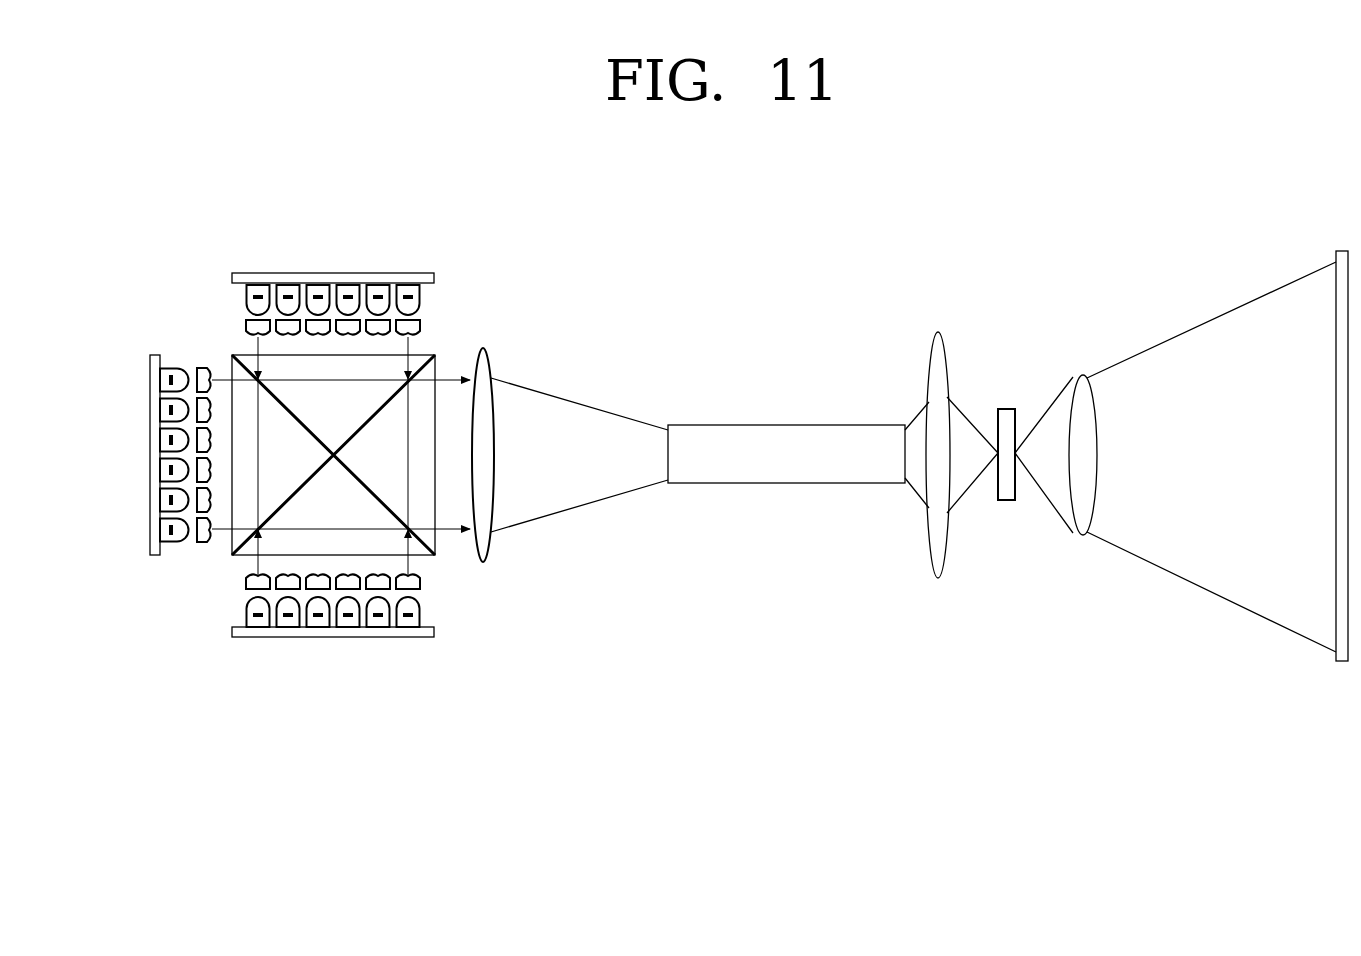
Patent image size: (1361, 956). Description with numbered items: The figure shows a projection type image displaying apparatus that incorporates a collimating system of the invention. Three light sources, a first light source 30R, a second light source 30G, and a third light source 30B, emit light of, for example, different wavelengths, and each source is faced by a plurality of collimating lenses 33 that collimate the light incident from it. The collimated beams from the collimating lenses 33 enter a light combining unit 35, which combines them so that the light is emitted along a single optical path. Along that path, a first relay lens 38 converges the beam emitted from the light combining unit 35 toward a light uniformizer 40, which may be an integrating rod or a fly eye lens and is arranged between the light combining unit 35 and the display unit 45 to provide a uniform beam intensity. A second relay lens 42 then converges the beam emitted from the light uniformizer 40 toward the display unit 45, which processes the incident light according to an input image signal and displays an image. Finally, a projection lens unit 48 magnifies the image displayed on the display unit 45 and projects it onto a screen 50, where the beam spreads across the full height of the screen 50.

The first light source 30R is at (333, 273).
The second light source 30G is at (150, 455).
The third light source 30B is at (333, 637).
The collimating lenses 33 is at (200, 368).
The light combining unit 35 is at (232, 530).
The first relay lens 38 is at (494, 445).
The light uniformizer 40 is at (792, 425).
The second relay lens 42 is at (938, 332).
The display unit 45 is at (1007, 409).
The projection lens unit 48 is at (1081, 375).
The screen 50 is at (1343, 250).